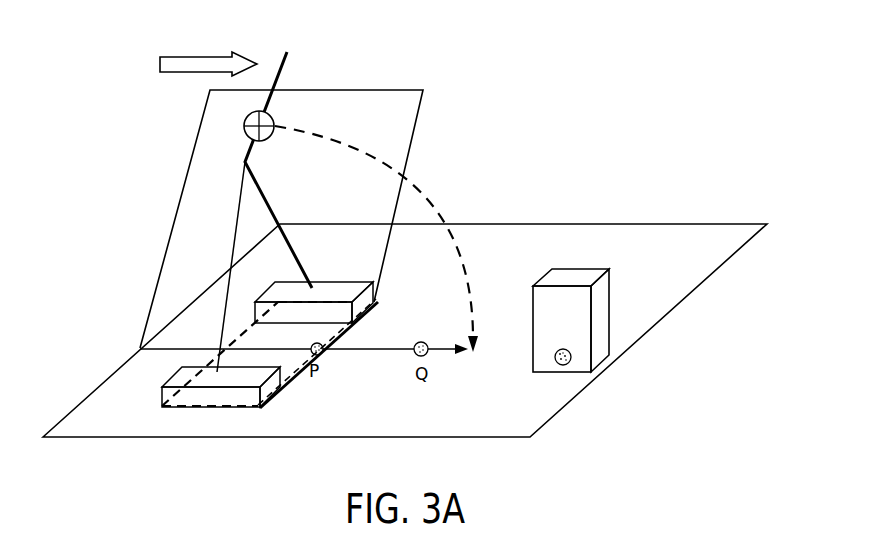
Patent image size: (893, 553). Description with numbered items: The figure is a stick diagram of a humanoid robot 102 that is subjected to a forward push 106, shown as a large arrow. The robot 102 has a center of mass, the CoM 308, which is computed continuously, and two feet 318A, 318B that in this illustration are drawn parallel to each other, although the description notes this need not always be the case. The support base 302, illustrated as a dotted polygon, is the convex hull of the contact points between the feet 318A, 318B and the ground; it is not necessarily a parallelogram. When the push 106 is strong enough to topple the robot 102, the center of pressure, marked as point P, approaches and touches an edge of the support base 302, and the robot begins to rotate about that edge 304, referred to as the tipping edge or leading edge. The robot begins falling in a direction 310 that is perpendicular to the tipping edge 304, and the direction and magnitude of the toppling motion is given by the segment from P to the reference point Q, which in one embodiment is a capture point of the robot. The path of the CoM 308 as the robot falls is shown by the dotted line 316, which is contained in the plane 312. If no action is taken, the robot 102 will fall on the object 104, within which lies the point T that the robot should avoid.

The humanoid robot 102 is at (244, 161).
The object 104 is at (573, 281).
The forward push 106 is at (199, 56).
The support base 302 is at (210, 362).
The tipping edge 304 is at (280, 392).
The CoM 308 is at (273, 118).
The direction of fall 310 is at (375, 351).
The plane 312 is at (419, 109).
The path of the CoM 316 is at (418, 197).
The foot 318A is at (240, 378).
The foot 318B is at (335, 289).